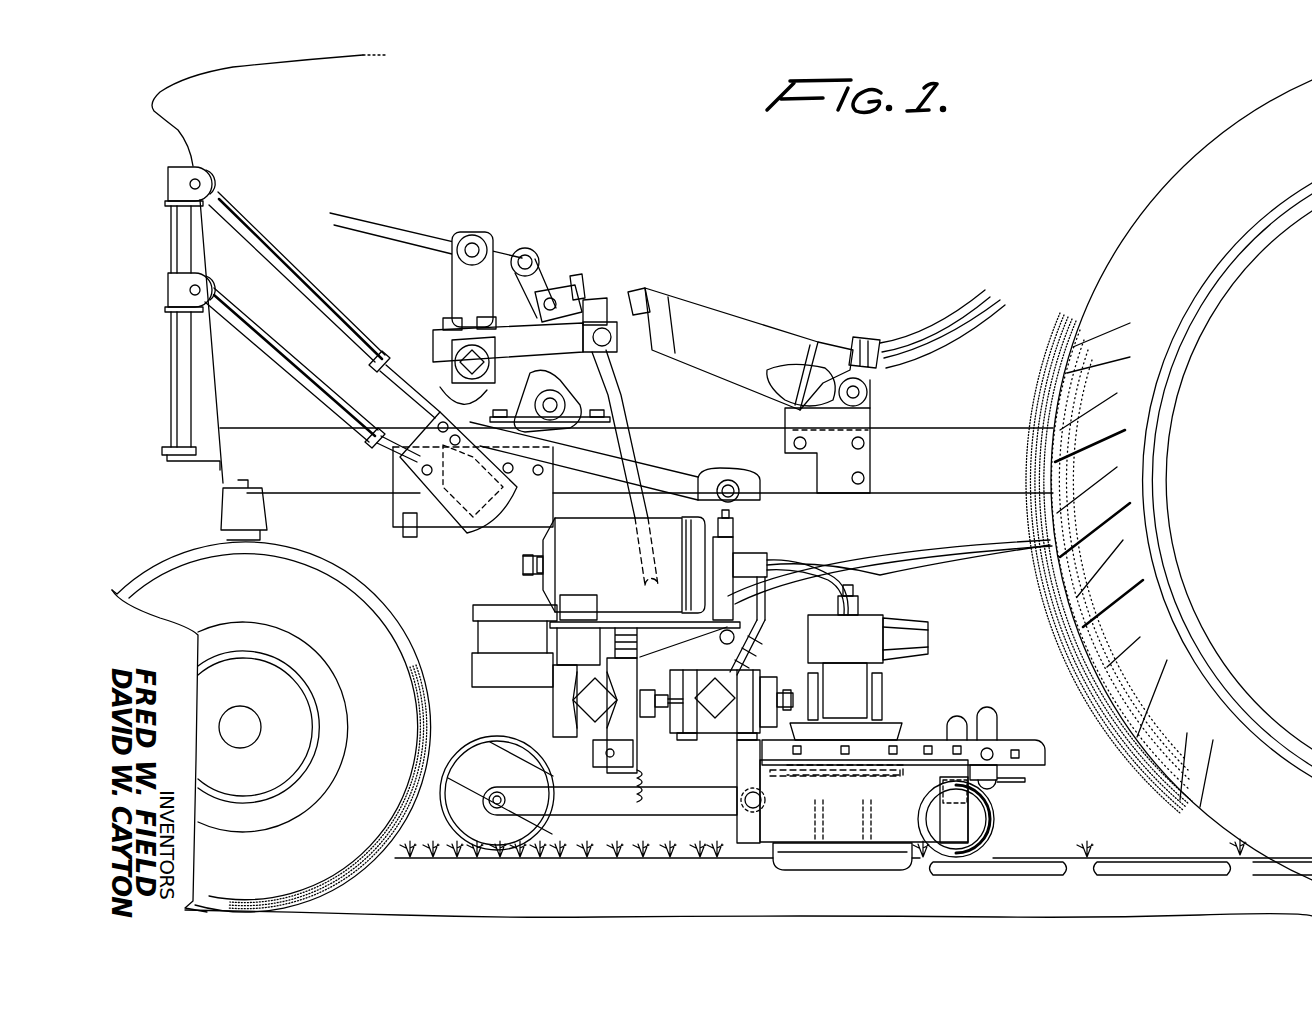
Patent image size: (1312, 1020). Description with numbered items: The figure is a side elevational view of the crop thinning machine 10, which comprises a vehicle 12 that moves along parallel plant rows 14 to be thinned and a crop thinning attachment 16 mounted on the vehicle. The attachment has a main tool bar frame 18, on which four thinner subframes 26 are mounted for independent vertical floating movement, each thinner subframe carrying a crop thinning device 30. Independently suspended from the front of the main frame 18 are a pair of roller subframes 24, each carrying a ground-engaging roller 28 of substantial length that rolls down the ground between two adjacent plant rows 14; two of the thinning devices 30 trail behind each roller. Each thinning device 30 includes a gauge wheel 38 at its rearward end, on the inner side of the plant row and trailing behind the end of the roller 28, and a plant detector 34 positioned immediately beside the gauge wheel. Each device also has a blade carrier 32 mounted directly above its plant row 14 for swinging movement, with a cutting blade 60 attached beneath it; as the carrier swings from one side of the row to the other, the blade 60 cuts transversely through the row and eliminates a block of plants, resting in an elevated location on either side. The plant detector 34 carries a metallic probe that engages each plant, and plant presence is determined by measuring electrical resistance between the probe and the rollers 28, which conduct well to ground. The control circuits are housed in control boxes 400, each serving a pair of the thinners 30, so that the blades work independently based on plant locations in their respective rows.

The crop thinning machine 10 is at (146, 136).
The vehicle 12 is at (245, 374).
The plant rows 14 is at (723, 860).
The crop thinning attachment 16 is at (990, 677).
The main tool bar frame 18 is at (717, 720).
The roller subframes 24 is at (653, 812).
The thinner subframes 26 is at (1020, 737).
The ground-engaging roller 28 is at (442, 806).
The crop thinning device 30 is at (930, 633).
The blade carrier 32 is at (823, 820).
The plant detector 34 is at (990, 810).
The gauge wheel 38 is at (993, 833).
The cutting blade 60 is at (803, 863).
The control boxes 400 is at (473, 627).